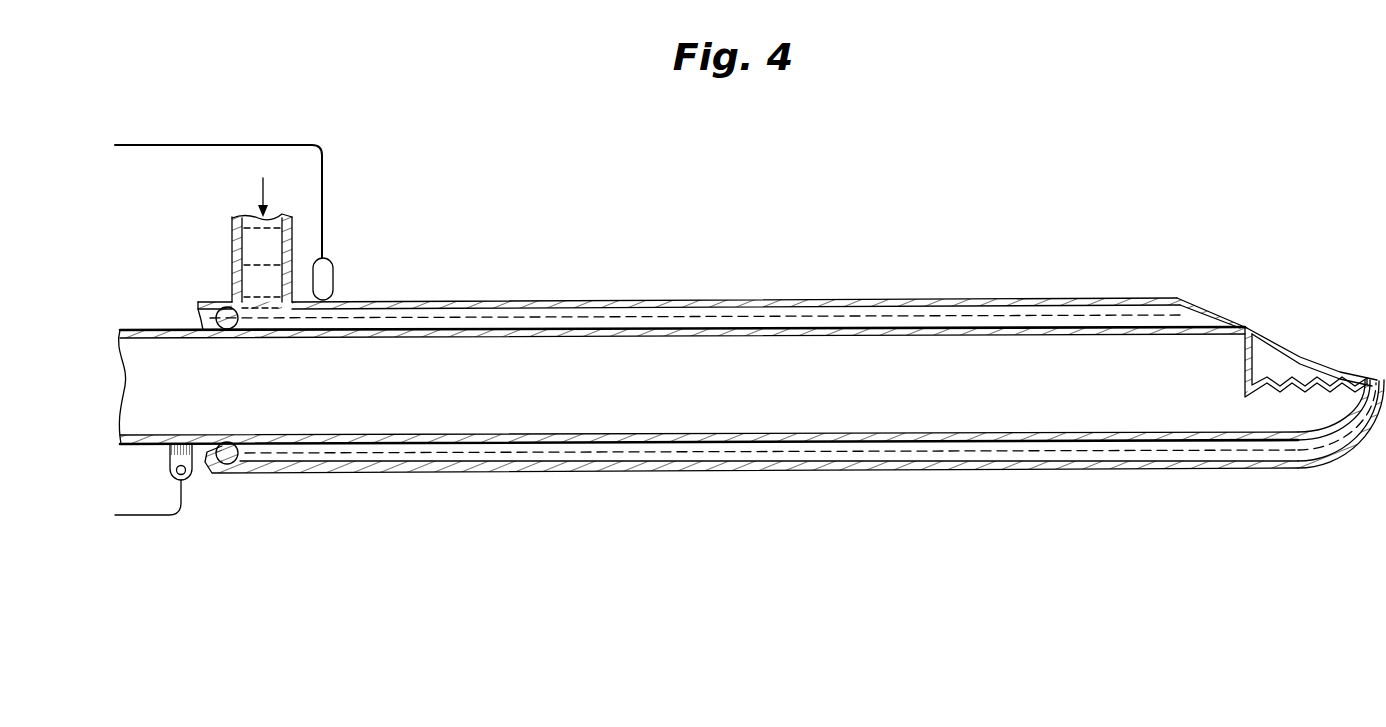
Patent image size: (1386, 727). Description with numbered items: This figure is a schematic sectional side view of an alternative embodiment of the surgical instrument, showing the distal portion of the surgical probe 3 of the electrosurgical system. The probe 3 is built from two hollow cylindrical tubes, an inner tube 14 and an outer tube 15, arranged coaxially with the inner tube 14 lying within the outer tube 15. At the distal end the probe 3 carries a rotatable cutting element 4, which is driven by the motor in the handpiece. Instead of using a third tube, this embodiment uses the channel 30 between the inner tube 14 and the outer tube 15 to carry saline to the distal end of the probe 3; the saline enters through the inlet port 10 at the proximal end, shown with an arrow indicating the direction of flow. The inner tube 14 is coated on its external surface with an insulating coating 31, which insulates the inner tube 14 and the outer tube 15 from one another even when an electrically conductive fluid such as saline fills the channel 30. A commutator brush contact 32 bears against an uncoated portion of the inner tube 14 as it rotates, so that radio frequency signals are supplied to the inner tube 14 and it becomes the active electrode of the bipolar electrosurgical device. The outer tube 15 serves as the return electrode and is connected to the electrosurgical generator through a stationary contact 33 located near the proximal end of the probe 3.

The surgical probe 3 is at (1030, 268).
The rotatable cutting element 4 is at (1267, 380).
The inlet port 10 is at (232, 250).
The inner tube 14 is at (926, 325).
The outer tube 15 is at (794, 477).
The channel 30 is at (666, 312).
The insulating coating 31 is at (660, 440).
The commutator brush contact 32 is at (191, 480).
The stationary contact 33 is at (326, 275).